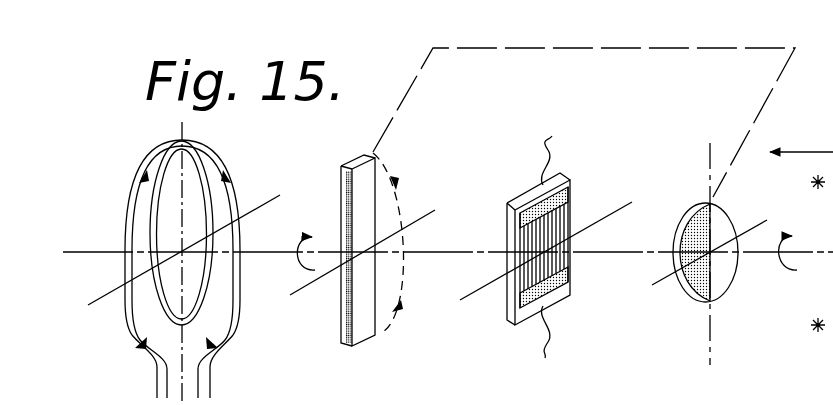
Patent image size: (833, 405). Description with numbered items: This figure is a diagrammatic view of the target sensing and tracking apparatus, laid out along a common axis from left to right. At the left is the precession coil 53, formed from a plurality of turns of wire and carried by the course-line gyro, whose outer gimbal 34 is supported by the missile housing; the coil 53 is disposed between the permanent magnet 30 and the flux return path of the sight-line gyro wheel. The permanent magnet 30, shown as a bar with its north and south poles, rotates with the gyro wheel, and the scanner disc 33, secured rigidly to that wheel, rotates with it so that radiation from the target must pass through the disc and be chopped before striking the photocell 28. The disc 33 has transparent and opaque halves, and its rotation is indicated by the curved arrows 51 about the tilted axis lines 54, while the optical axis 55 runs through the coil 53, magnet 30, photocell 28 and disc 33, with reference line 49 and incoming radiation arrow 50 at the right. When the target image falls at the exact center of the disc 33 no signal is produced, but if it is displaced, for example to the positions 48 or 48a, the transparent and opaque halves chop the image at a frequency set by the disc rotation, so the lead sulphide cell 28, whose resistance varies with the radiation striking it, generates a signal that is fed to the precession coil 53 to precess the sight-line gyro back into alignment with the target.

The precession coil 53 is at (145, 157).
The outer gimbal 34 is at (91, 263).
The permanent magnet 30 is at (353, 166).
The tilted rotation axis 54 is at (410, 226).
The rotation direction arrow 51 is at (300, 266).
The photocell 28 is at (533, 196).
The optical axis 55 is at (600, 252).
The reference line 49 is at (709, 164).
The light direction arrow 50 is at (801, 138).
The displaced target image position 48 is at (800, 191).
The displaced target image position 48a is at (808, 338).
The scanner disc 33 is at (697, 298).